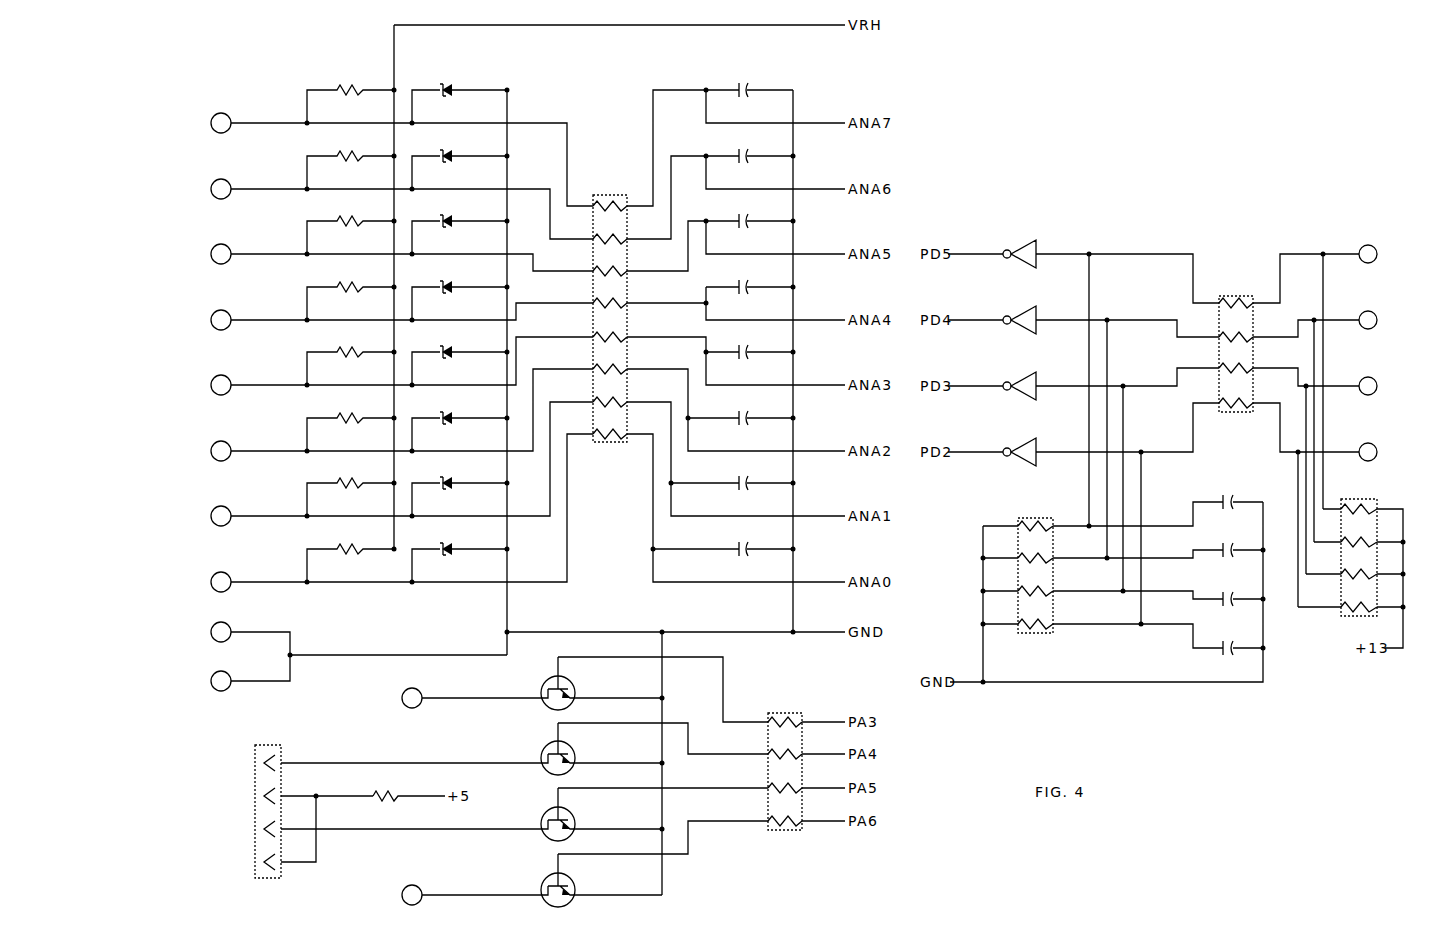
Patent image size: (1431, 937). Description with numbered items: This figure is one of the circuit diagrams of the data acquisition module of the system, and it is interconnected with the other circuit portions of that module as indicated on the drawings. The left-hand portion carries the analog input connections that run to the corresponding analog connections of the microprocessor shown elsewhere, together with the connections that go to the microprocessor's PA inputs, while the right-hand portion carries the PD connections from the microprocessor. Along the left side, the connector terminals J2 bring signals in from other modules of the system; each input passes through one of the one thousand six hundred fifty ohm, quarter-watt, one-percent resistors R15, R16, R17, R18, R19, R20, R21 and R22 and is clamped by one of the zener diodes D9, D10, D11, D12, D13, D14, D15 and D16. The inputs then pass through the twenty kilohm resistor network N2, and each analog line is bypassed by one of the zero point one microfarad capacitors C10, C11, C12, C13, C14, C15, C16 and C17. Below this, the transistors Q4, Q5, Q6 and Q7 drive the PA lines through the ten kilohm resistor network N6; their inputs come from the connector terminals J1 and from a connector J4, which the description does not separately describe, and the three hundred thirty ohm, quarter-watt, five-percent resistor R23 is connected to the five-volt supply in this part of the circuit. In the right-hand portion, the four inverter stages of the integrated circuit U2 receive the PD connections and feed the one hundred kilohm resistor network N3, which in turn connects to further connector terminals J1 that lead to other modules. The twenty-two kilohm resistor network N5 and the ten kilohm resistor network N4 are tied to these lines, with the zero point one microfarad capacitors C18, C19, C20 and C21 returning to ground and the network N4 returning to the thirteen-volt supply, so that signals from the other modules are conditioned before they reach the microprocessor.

The resistor R15 is at (350, 91).
The resistor R16 is at (350, 157).
The resistor R17 is at (350, 222).
The resistor R18 is at (350, 288).
The resistor R19 is at (350, 353).
The resistor R20 is at (350, 419).
The resistor R21 is at (350, 484).
The resistor R22 is at (350, 550).
The resistor R23 is at (403, 783).
The zener diode D9 is at (459, 93).
The zener diode D10 is at (459, 159).
The zener diode D11 is at (459, 224).
The zener diode D12 is at (459, 290).
The zener diode D13 is at (459, 355).
The zener diode D14 is at (459, 421).
The zener diode D15 is at (459, 486).
The zener diode D16 is at (459, 552).
The resistor network N2 is at (610, 305).
The resistor network N3 is at (1236, 341).
The resistor network N4 is at (1359, 545).
The resistor network N5 is at (1035, 563).
The resistor network N6 is at (785, 757).
The capacitor C10 is at (740, 90).
The capacitor C11 is at (740, 156).
The capacitor C12 is at (740, 221).
The capacitor C13 is at (740, 287).
The capacitor C14 is at (740, 352).
The capacitor C15 is at (740, 418).
The capacitor C16 is at (740, 483).
The capacitor C17 is at (740, 549).
The capacitor C18 is at (1226, 501).
The capacitor C19 is at (1226, 549).
The capacitor C20 is at (1226, 598).
The capacitor C21 is at (1226, 647).
The transistor Q4 is at (542, 683).
The transistor Q5 is at (471, 749).
The transistor Q6 is at (471, 814).
The transistor Q7 is at (542, 880).
The integrated circuit U2 is at (1005, 337).
The connector terminals J1 is at (872, 566).
The connector terminals J2 is at (225, 393).
The connector J4 is at (226, 803).